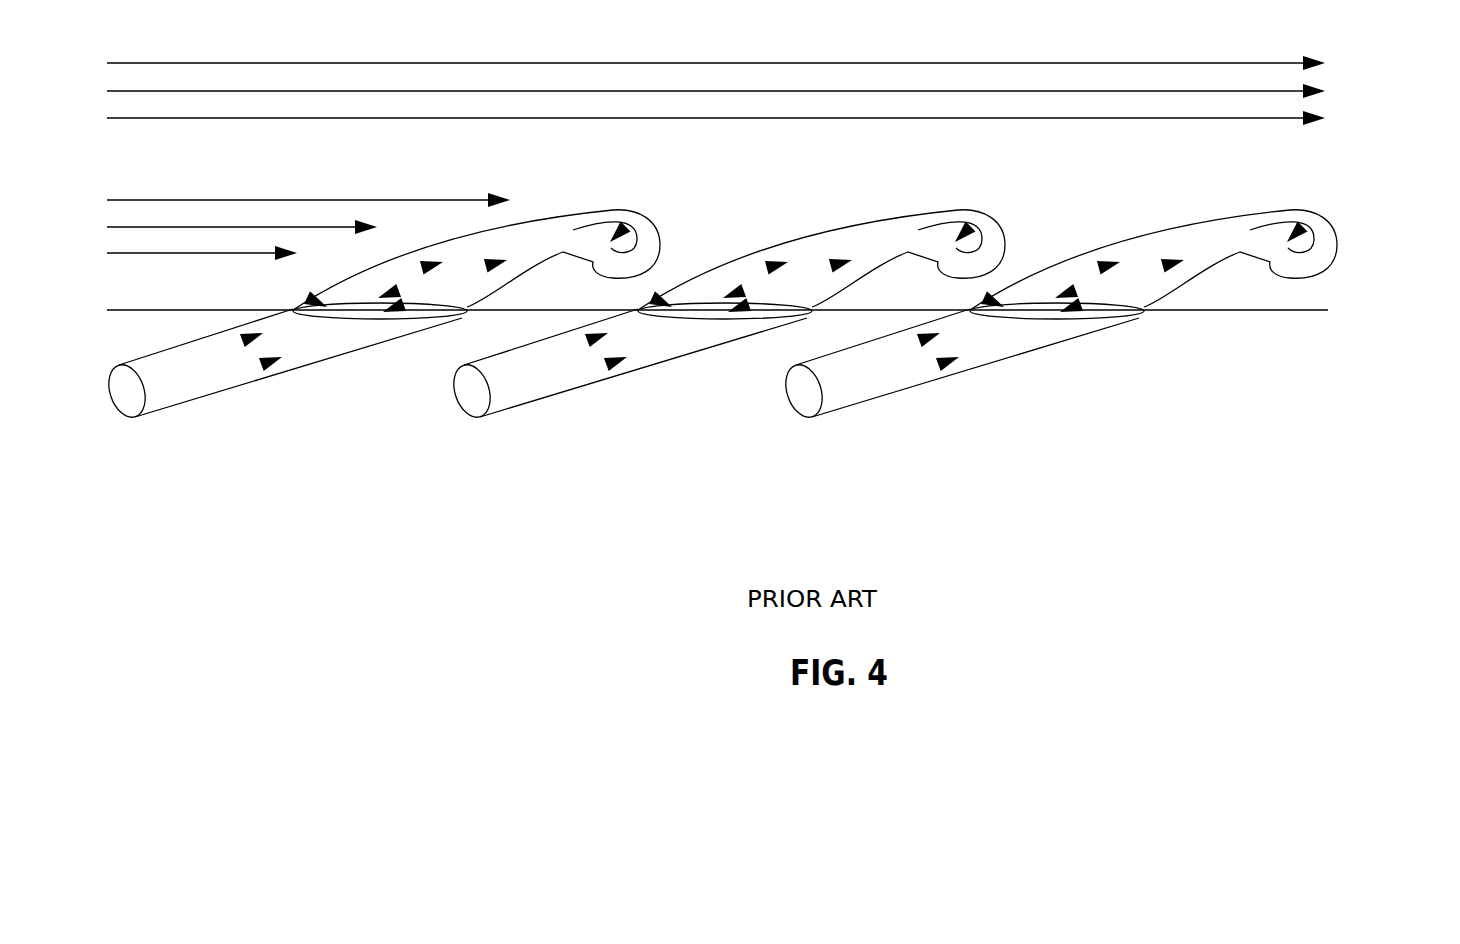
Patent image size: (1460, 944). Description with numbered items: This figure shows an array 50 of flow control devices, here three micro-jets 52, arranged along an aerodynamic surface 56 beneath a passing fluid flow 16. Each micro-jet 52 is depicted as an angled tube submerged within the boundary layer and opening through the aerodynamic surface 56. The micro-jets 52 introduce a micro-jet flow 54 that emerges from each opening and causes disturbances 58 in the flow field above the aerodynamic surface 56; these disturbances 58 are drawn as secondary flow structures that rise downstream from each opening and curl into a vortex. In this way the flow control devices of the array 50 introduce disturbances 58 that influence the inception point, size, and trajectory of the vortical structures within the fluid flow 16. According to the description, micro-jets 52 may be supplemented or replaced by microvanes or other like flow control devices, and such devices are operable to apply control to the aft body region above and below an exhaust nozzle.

The fluid flow 16 is at (716, 140).
The array 50 is at (620, 413).
The micro-jet 52 is at (620, 383).
The micro-jet flow 54 is at (956, 370).
The aerodynamic surface 56 is at (717, 293).
The disturbances 58 is at (869, 231).